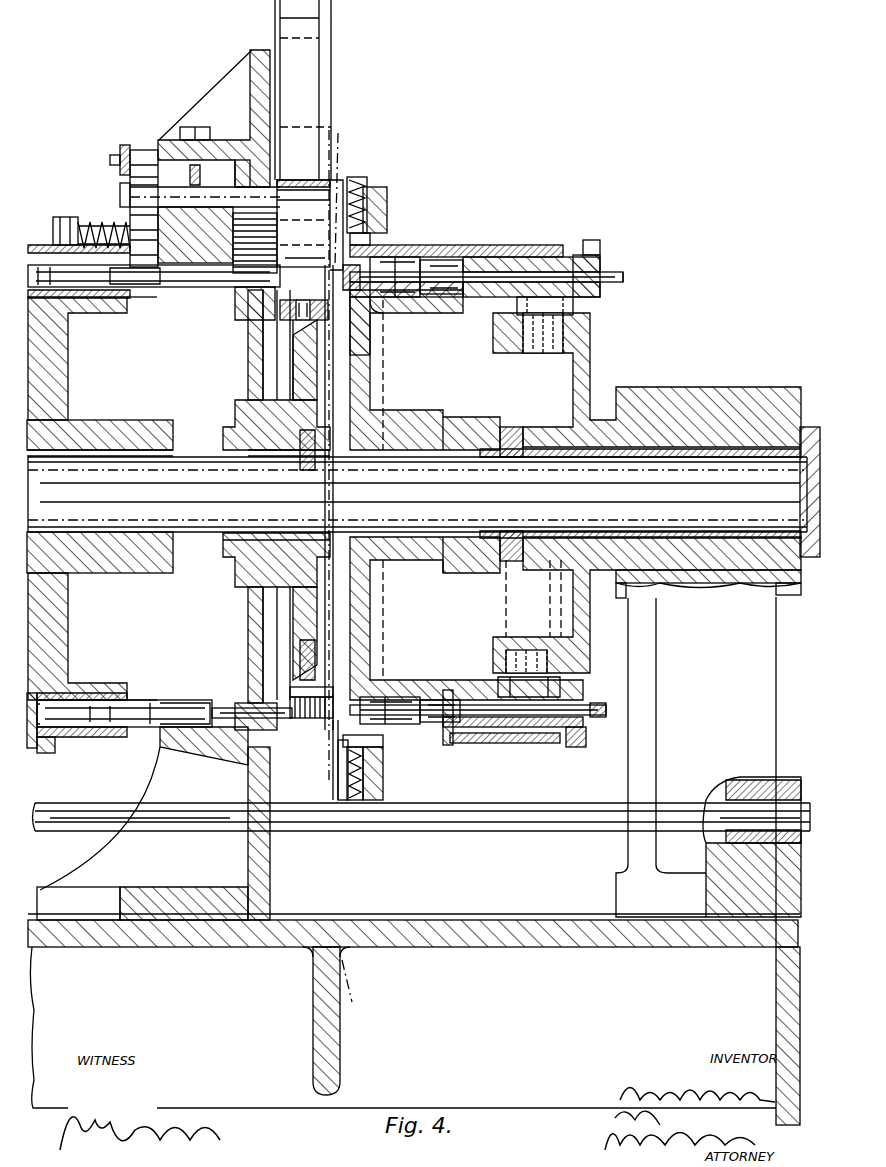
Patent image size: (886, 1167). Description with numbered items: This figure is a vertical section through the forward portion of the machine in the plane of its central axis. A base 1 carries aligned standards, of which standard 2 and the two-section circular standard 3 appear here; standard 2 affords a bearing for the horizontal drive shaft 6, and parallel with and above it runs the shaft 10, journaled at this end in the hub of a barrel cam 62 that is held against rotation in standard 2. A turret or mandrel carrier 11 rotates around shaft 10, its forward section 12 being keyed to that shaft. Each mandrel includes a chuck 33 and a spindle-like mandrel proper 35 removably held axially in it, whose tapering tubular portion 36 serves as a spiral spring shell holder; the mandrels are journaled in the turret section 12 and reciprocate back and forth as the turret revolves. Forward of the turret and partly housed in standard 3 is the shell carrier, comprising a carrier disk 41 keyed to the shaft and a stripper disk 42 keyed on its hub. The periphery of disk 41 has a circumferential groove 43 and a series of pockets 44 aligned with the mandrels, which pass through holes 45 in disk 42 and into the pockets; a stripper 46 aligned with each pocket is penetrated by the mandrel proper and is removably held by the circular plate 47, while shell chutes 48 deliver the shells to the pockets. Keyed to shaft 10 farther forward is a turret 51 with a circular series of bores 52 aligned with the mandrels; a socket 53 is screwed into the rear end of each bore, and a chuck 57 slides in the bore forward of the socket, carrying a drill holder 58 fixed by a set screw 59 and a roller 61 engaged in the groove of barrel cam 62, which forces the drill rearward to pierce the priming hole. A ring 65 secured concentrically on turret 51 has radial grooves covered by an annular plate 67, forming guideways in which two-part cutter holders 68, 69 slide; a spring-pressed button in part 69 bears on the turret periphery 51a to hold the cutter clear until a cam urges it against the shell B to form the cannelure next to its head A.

The base 1 is at (497, 947).
The standard 2 is at (772, 670).
The standard 3 is at (262, 770).
The horizontal drive shaft 6 is at (350, 563).
The shaft 10 is at (417, 494).
The turret or mandrel carrier 11 is at (41, 728).
The forward turret section 12 is at (75, 740).
The chuck 33 is at (170, 712).
The mandrel proper 35 is at (221, 708).
The spiral spring shell holder 36 is at (215, 285).
The carrier disk 41 is at (313, 628).
The stripper disk 42 is at (248, 636).
The circumferential groove 43 is at (380, 247).
The pockets 44 is at (327, 300).
The holes 45 is at (244, 300).
The stripper 46 is at (250, 320).
The circular plate 47 is at (270, 368).
The shell chutes 48 is at (332, 78).
The turret 51 is at (490, 748).
The turret periphery 51a is at (390, 758).
The bores 52 is at (438, 745).
The socket 53 is at (390, 697).
The chuck 57 is at (525, 748).
The drill holder 58 is at (590, 708).
The set screw 59 is at (578, 748).
The roller 61 is at (565, 676).
The barrel cam 62 is at (586, 628).
The ring 65 is at (383, 789).
The annular plate 67 is at (335, 760).
The cutter holder part 68 is at (340, 774).
The cutter holder part 69 is at (356, 800).
The head of the shell A is at (341, 705).
The shell B is at (318, 720).